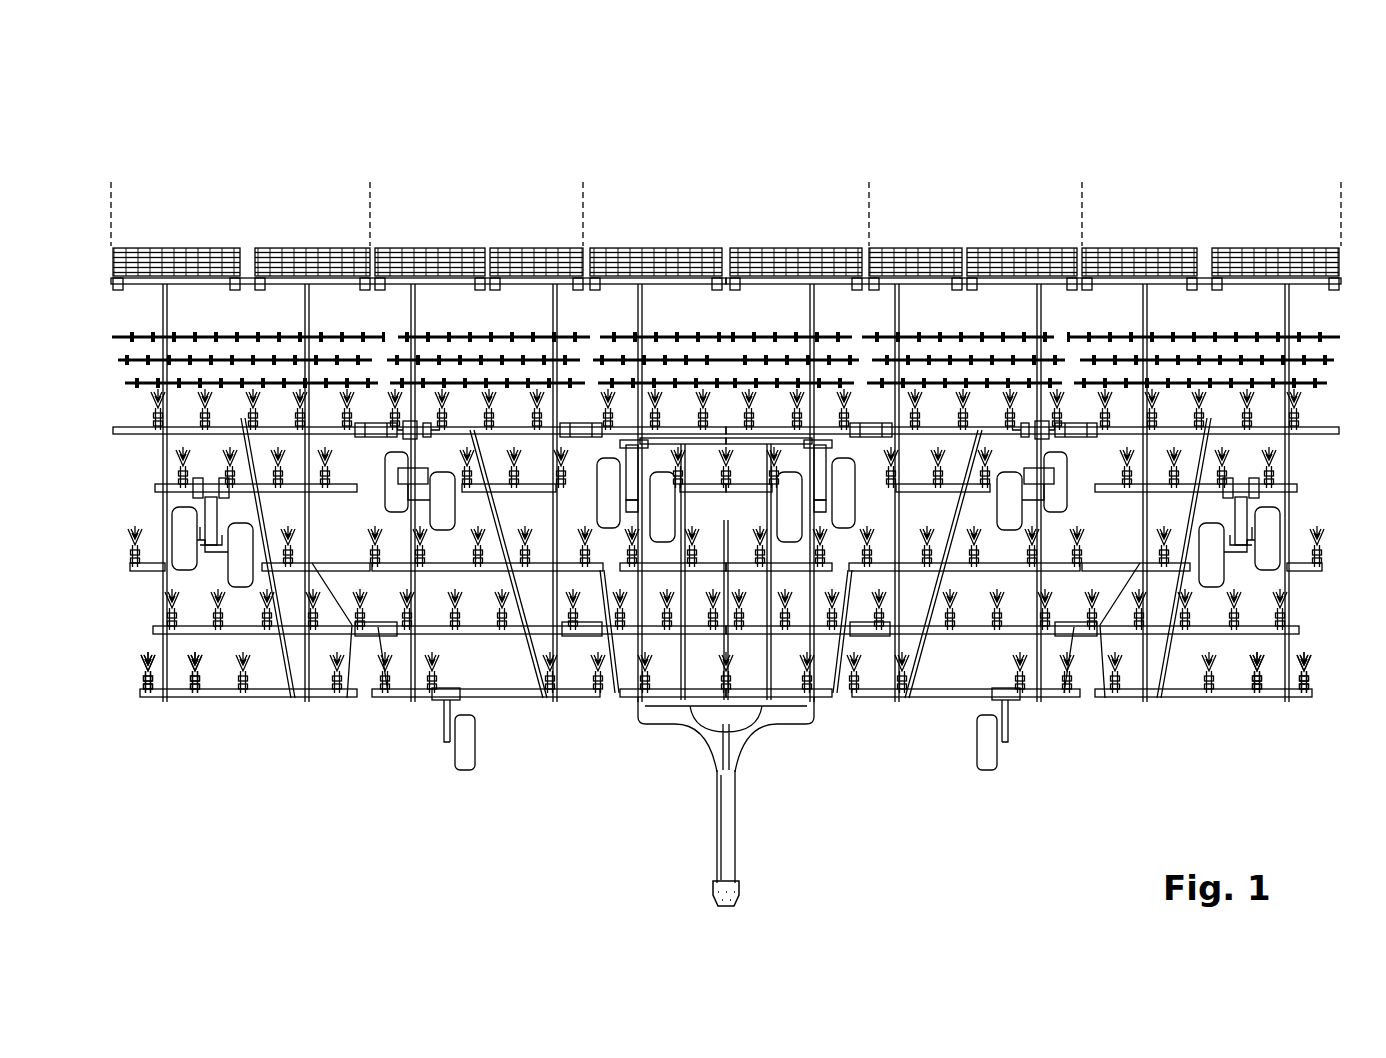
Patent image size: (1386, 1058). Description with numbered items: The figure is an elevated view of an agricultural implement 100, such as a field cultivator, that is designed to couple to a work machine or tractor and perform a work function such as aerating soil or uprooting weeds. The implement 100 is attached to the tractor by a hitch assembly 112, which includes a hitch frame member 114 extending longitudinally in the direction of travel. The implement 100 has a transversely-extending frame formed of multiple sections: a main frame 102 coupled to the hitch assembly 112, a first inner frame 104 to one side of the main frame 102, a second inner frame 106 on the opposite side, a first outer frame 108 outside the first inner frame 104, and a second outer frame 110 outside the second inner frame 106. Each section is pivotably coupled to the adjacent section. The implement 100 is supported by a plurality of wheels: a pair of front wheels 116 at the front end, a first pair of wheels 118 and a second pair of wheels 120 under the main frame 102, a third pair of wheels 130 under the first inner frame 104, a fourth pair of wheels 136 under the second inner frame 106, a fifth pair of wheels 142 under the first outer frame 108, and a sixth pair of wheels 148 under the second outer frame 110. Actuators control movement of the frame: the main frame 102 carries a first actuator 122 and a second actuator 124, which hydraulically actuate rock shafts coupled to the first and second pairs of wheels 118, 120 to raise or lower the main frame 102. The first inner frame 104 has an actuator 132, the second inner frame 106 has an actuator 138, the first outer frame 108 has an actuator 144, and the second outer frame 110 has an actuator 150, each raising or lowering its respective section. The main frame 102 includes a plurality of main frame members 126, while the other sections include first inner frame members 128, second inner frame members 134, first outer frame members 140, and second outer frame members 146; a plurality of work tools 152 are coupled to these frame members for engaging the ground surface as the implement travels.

The agricultural implement 100 is at (725, 488).
The main frame 102 is at (713, 247).
The first inner frame 104 is at (472, 247).
The second inner frame 106 is at (972, 247).
The first outer frame 108 is at (238, 247).
The second outer frame 110 is at (1156, 247).
The hitch assembly 112 is at (741, 905).
The hitch frame member 114 is at (718, 862).
The front wheels 116 is at (467, 772).
The first pair of wheels 118 is at (604, 570).
The second pair of wheels 120 is at (848, 570).
The first actuator 122 is at (634, 475).
The second actuator 124 is at (816, 475).
The main frame members 126 is at (778, 698).
The first inner frame members 128 is at (505, 698).
The third pair of wheels 130 is at (395, 505).
The actuator 132 is at (428, 438).
The second inner frame members 134 is at (947, 698).
The fourth pair of wheels 136 is at (1057, 505).
The actuator 138 is at (1024, 438).
The first outer frame members 140 is at (272, 698).
The fifth pair of wheels 142 is at (240, 565).
The actuator 144 is at (212, 520).
The second outer frame members 146 is at (1180, 698).
The sixth pair of wheels 148 is at (1212, 565).
The actuator 150 is at (1238, 520).
The work tools 152 is at (193, 668).